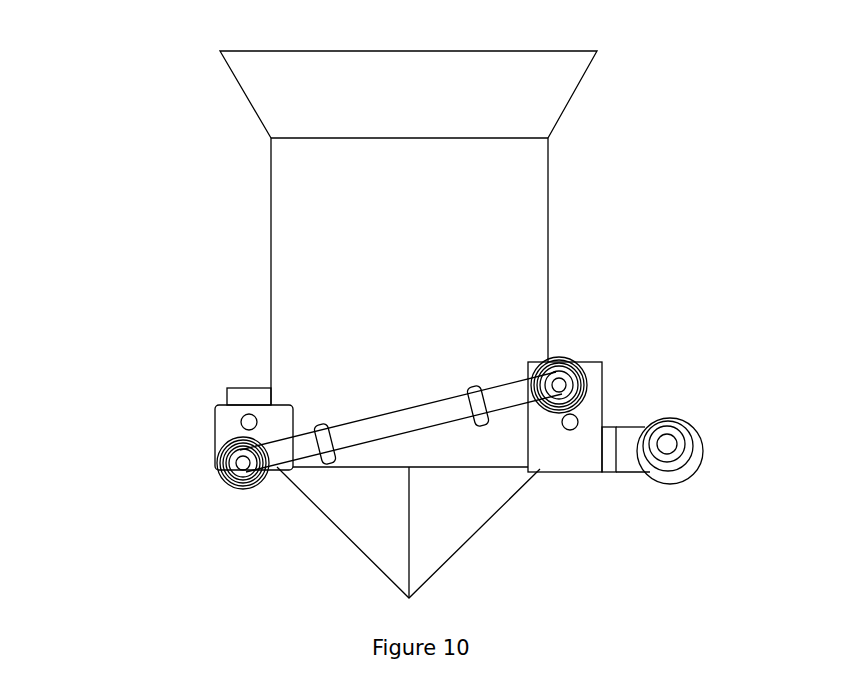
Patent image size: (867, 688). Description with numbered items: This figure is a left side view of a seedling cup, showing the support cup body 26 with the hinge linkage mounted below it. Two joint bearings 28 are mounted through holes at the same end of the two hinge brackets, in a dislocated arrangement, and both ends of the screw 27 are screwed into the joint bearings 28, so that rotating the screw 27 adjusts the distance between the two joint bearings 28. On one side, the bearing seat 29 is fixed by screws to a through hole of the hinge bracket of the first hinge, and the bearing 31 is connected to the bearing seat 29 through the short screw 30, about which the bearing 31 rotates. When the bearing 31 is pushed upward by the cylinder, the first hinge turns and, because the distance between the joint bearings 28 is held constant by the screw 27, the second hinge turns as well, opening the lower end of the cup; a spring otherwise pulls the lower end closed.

The support cup body 26 is at (319, 324).
The screw 27 is at (301, 320).
The joint bearing 28 is at (167, 375).
The bearing seat 29 is at (654, 320).
The short screw 30 is at (708, 372).
The bearing 31 is at (716, 403).